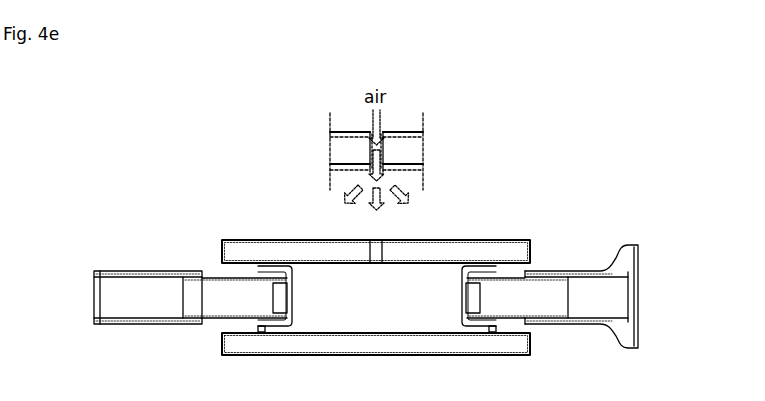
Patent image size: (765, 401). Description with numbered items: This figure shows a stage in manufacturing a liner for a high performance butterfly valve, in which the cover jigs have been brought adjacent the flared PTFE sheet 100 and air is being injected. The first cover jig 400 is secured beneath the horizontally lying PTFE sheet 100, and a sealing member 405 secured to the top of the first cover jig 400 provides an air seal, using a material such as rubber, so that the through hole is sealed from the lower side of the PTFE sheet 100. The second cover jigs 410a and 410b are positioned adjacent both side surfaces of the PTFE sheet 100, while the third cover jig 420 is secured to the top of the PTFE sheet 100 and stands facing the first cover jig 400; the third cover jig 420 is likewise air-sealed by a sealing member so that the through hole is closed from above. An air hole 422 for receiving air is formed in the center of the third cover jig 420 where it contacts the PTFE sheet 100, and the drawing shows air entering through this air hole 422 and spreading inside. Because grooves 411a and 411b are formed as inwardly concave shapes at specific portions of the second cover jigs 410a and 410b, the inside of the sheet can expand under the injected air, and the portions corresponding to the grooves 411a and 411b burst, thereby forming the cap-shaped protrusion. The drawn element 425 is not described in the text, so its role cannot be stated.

The PTFE sheet 100 is at (337, 305).
The first cover jig 400 is at (432, 346).
The sealing member 405 is at (492, 330).
The second cover jig 410a is at (120, 268).
The second cover jig 410b is at (590, 268).
The groove 411a is at (276, 298).
The groove 411b is at (478, 295).
The third cover jig 420 is at (507, 246).
The air hole 422 is at (373, 250).
The clamp bracket 425 is at (257, 267).